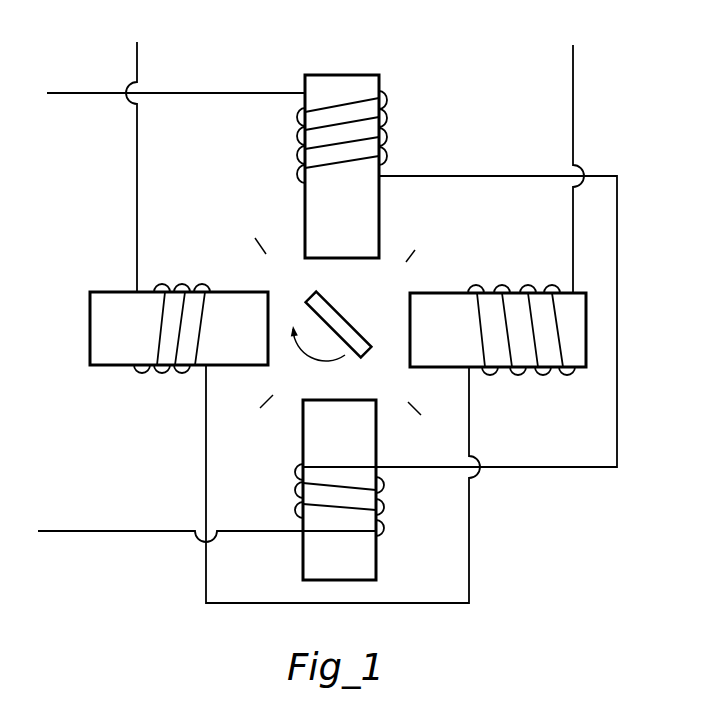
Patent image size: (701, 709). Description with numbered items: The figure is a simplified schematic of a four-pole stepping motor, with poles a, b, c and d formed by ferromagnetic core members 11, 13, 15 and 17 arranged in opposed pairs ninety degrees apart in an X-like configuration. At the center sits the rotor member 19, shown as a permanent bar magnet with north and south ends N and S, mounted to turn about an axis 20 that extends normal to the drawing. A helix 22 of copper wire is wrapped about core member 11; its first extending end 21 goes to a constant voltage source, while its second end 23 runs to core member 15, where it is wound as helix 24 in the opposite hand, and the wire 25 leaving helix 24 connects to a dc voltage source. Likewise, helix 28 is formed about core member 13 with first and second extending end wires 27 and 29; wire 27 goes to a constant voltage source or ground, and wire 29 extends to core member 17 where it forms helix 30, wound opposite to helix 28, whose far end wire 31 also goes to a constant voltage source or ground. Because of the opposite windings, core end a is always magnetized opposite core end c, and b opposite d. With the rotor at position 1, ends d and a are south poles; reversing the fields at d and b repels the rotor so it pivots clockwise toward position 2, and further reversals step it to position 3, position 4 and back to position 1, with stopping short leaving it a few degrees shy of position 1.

The position 1 is at (267, 254).
The position 2 is at (417, 245).
The position 3 is at (419, 420).
The position 4 is at (258, 416).
The core member 11 is at (339, 84).
The core member 13 is at (580, 304).
The core member 15 is at (378, 560).
The core member 17 is at (90, 347).
The rotor member 19 is at (349, 309).
The axis 20 is at (338, 328).
The first extending end 21 is at (102, 93).
The helix 22 is at (360, 99).
The second end 23 is at (462, 176).
The helix 24 is at (320, 547).
The wire 25 is at (108, 531).
The first extending end wire 27 is at (574, 120).
The helix 28 is at (541, 346).
The second extending end wire 29 is at (206, 445).
The helix 30 is at (152, 345).
The wire 31 is at (138, 66).